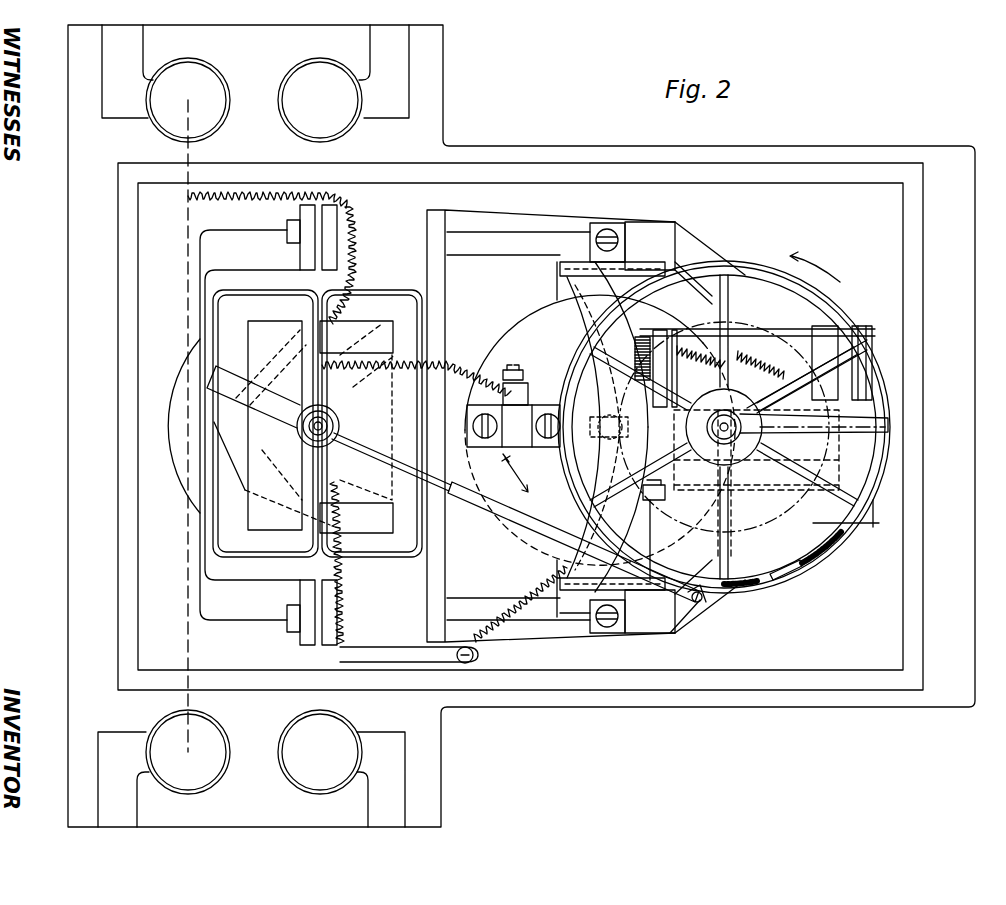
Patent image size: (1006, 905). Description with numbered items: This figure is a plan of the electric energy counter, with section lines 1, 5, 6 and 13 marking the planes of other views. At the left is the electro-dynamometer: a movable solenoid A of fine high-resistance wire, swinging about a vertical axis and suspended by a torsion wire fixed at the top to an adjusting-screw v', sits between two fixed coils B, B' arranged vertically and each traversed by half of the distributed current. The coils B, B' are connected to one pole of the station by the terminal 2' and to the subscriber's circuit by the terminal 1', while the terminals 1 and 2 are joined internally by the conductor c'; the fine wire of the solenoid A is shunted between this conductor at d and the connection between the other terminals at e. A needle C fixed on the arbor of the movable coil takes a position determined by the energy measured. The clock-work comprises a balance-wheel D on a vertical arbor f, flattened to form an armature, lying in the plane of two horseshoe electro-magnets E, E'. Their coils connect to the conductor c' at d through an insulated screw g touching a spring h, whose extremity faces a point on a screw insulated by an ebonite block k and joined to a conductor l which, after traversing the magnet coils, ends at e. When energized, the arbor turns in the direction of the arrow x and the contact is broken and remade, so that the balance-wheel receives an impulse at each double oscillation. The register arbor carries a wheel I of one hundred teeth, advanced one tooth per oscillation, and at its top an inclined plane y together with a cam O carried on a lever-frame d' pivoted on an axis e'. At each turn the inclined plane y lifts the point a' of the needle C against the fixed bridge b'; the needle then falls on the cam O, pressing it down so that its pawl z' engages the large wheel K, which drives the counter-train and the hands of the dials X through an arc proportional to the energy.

The terminal 1 is at (498, 255).
The terminal 1' is at (320, 100).
The terminal 2 is at (188, 752).
The terminal 2' is at (320, 752).
The section line 5 is at (320, 828).
The section line 6 is at (605, 773).
The section line 13 is at (772, 648).
The movable solenoid A is at (268, 445).
The fixed coil B is at (271, 425).
The fixed coil B' is at (356, 427).
The needle C is at (515, 517).
The balance-wheel D is at (600, 430).
The horseshoe electro-magnet E is at (598, 509).
The horseshoe electro-magnet E' is at (599, 344).
The bearing block G is at (688, 633).
The toothed wheel I is at (747, 441).
The large wheel K is at (848, 553).
The cam O is at (722, 472).
The dials X is at (852, 518).
The point of the needle a' is at (714, 519).
The bridge b' is at (646, 368).
The conductor c' is at (178, 426).
The connection point d is at (349, 294).
The lever-frame d' is at (761, 361).
The connection point e is at (342, 563).
The axis e' is at (702, 324).
The arbor of the balance-wheel f is at (655, 530).
The screw g is at (518, 374).
The spring h is at (524, 394).
The ebonite block k is at (513, 426).
The conductor l is at (453, 614).
The adjusting-screw v' is at (336, 423).
The arrow x is at (515, 473).
The inclined plane y is at (814, 421).
The pawl z' is at (782, 566).